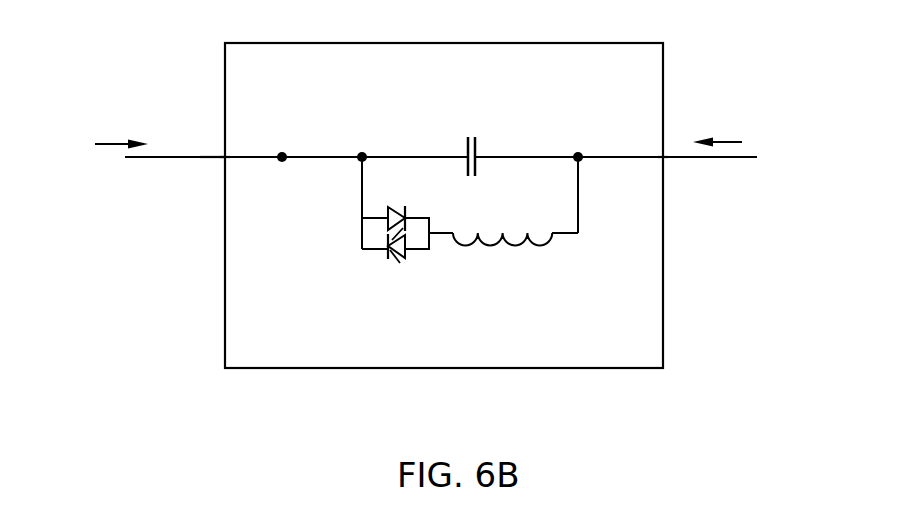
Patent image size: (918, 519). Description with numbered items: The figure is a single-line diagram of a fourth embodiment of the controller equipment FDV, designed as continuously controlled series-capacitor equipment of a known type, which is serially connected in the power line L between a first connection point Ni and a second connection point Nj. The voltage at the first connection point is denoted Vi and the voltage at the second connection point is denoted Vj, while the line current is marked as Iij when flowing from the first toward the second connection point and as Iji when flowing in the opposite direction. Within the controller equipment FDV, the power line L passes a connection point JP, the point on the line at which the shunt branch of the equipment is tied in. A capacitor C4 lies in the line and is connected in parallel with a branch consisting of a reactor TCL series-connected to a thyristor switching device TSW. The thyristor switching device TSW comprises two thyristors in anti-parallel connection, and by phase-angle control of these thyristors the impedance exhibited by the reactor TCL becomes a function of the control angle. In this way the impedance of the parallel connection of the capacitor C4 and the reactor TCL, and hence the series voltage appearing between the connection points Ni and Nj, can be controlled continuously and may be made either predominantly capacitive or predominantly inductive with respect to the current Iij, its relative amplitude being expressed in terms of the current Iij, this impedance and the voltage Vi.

The controller equipment FDV is at (663, 277).
The power line L is at (147, 160).
The first connection point Ni is at (225, 157).
The second connection point Nj is at (663, 157).
The voltage at the first connection point Vi is at (225, 157).
The voltage at the second connection point Vj is at (663, 158).
The current from first to second connection point Iij is at (104, 104).
The current from second to first connection point Iji is at (732, 101).
The connection point JP is at (282, 155).
The capacitor C4 is at (466, 145).
The thyristor switching device TSW is at (363, 258).
The reactor TCL is at (513, 245).